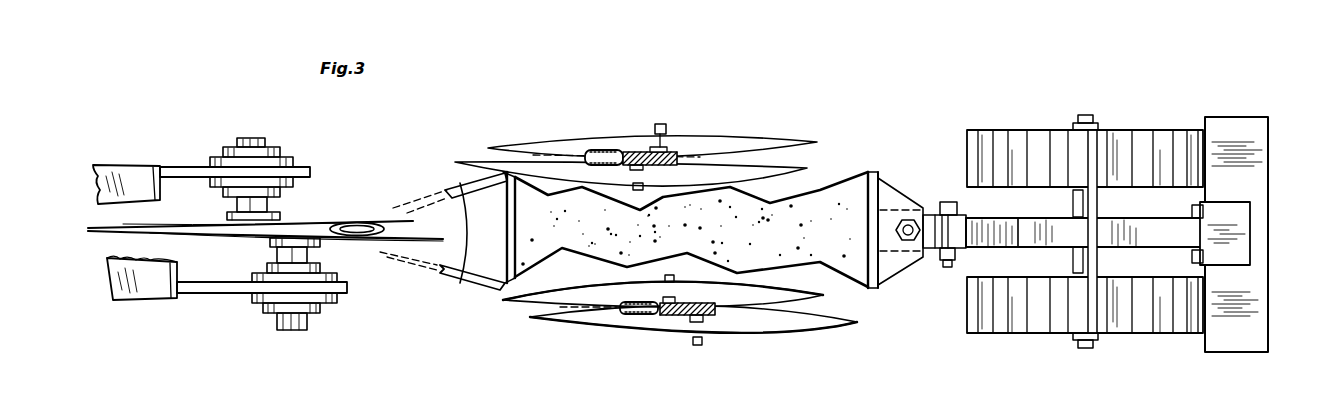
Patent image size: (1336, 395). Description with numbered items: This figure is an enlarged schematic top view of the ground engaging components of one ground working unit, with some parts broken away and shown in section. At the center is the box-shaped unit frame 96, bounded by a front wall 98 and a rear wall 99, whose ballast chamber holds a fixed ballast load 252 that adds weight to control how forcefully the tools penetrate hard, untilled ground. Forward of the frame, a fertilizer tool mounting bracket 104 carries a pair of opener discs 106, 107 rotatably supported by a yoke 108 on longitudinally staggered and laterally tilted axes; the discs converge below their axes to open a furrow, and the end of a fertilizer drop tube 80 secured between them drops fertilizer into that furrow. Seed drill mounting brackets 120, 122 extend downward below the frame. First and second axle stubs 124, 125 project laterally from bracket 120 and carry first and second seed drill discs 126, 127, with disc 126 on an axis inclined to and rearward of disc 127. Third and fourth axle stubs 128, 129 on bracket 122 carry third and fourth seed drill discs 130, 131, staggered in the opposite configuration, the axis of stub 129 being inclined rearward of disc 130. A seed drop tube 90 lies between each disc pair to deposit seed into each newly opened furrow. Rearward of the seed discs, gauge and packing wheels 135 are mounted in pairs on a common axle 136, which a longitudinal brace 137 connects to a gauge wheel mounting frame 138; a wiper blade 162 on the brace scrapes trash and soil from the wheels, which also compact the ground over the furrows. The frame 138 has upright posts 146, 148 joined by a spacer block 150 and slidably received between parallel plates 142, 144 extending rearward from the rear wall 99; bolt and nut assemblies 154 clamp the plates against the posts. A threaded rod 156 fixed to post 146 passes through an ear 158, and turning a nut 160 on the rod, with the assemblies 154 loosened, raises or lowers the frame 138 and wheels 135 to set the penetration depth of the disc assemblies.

The fertilizer drop tube 80 is at (350, 223).
The seed drop tube 90 is at (597, 150).
The unit frame 96 is at (503, 198).
The front wall 98 is at (510, 263).
The rear wall 99 is at (878, 187).
The fertilizer tool mounting bracket 104 is at (467, 275).
The opener disc 106 is at (318, 218).
The opener disc 107 is at (327, 240).
The yoke 108 is at (174, 162).
The seed drill mounting bracket 120 is at (634, 152).
The seed drill mounting bracket 122 is at (675, 317).
The first axle stub 124 is at (668, 126).
The second axle stub 125 is at (647, 181).
The first seed drill disc 126 is at (787, 140).
The second seed drill disc 127 is at (790, 173).
The third axle stub 128 is at (674, 279).
The fourth axle stub 129 is at (703, 342).
The third seed drill disc 130 is at (823, 292).
The fourth seed drill disc 131 is at (830, 320).
The gauge and packing wheel 135 is at (1145, 133).
The common axle 136 is at (1097, 260).
The longitudinal brace 137 is at (1065, 238).
The gauge wheel mounting frame 138 is at (990, 250).
The plate 142 is at (940, 207).
The plate 144 is at (933, 252).
The upright post 146 is at (928, 222).
The upright post 148 is at (1005, 223).
The spacer block 150 is at (955, 223).
The bolt and nut assembly 154 is at (947, 268).
The threaded rod 156 is at (895, 223).
The ear 158 is at (893, 263).
The nut 160 is at (900, 232).
The wiper blade 162 is at (1270, 160).
The fixed ballast load 252 is at (731, 235).